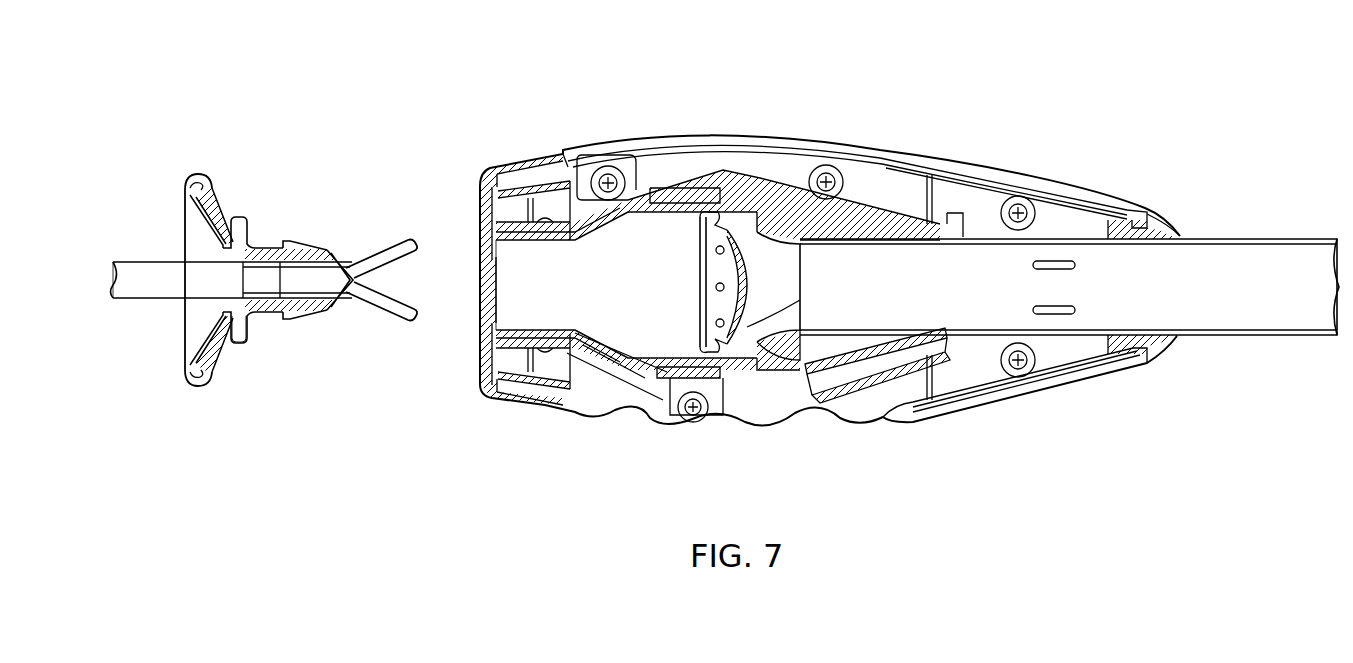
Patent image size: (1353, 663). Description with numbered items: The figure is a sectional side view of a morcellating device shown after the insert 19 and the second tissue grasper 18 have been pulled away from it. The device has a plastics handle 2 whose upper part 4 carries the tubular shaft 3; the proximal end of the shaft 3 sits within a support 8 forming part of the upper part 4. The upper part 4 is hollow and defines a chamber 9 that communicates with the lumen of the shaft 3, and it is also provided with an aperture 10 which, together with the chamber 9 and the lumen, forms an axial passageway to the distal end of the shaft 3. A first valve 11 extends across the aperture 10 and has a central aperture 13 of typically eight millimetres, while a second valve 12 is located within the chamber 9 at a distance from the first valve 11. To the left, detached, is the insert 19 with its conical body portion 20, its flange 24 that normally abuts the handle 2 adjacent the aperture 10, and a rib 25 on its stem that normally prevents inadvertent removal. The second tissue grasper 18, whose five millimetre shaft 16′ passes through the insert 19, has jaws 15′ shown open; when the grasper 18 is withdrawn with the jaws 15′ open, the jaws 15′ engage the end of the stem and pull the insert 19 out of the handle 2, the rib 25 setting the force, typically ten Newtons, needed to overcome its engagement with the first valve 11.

The handle 2 is at (673, 80).
The tubular shaft 3 is at (1258, 340).
The upper part 4 is at (735, 142).
The support 8 is at (772, 175).
The chamber 9 is at (683, 342).
The aperture 10 is at (532, 300).
The first valve 11 is at (318, 312).
The second valve 12 is at (770, 322).
The central aperture 13 is at (497, 288).
The jaws 15′ is at (410, 243).
The shaft 16′ is at (163, 292).
The second tissue grasper 18 is at (132, 242).
The insert 19 is at (250, 118).
The conical body portion 20 is at (195, 178).
The flange 24 is at (242, 342).
The rib 25 is at (285, 247).